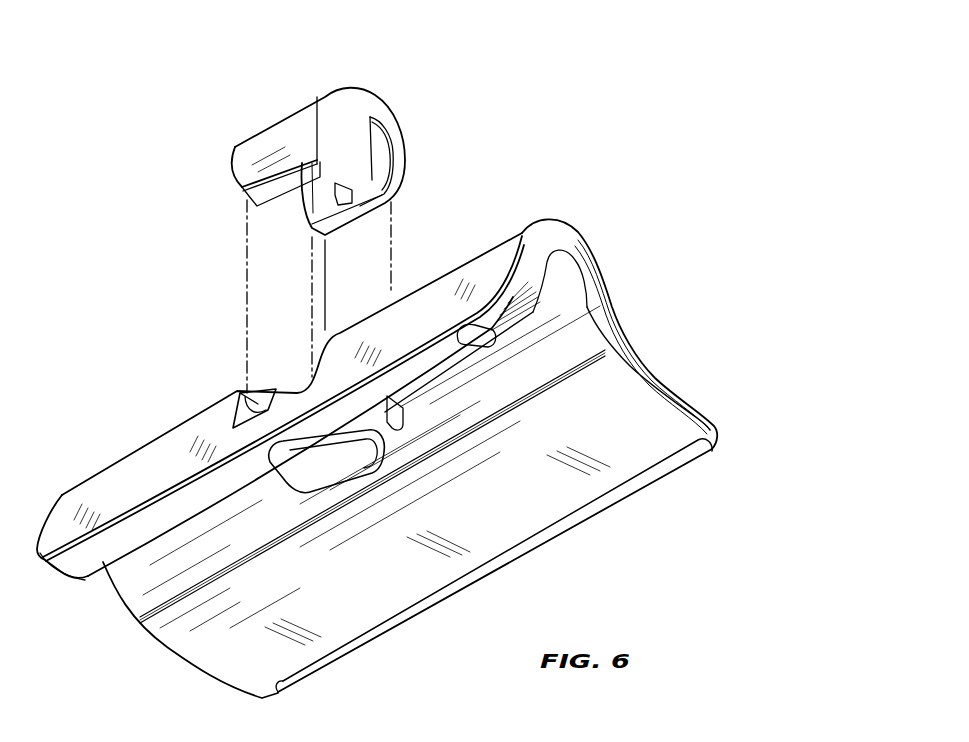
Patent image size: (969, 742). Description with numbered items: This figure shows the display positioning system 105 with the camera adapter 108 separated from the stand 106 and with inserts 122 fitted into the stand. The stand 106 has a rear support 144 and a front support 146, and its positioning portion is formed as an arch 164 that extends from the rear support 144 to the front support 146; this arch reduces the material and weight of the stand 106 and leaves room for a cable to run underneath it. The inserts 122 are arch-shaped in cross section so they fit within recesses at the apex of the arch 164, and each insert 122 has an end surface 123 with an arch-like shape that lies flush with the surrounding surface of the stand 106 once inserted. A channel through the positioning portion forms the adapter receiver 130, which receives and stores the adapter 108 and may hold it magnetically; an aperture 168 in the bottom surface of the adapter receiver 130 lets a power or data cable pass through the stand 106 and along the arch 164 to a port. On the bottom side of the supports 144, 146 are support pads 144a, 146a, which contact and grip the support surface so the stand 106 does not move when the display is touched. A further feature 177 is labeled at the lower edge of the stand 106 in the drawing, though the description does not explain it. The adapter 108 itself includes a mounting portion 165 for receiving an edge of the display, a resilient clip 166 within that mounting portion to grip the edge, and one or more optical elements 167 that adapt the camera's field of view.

The display positioning system 105 is at (646, 101).
The stand 106 is at (660, 338).
The adapter 108 is at (338, 112).
The insert 122 is at (563, 242).
The end surface 123 is at (590, 268).
The adapter receiver 130 is at (285, 392).
The rear support 144 is at (657, 427).
The support pad 144a is at (643, 482).
The front support 146 is at (487, 258).
The support pad 146a is at (97, 565).
The arch 164 is at (570, 324).
The mounting portion 165 is at (383, 142).
The clip 166 is at (352, 200).
The optical element 167 is at (300, 188).
The aperture 168 is at (335, 452).
The curved end portion 177 is at (339, 652).